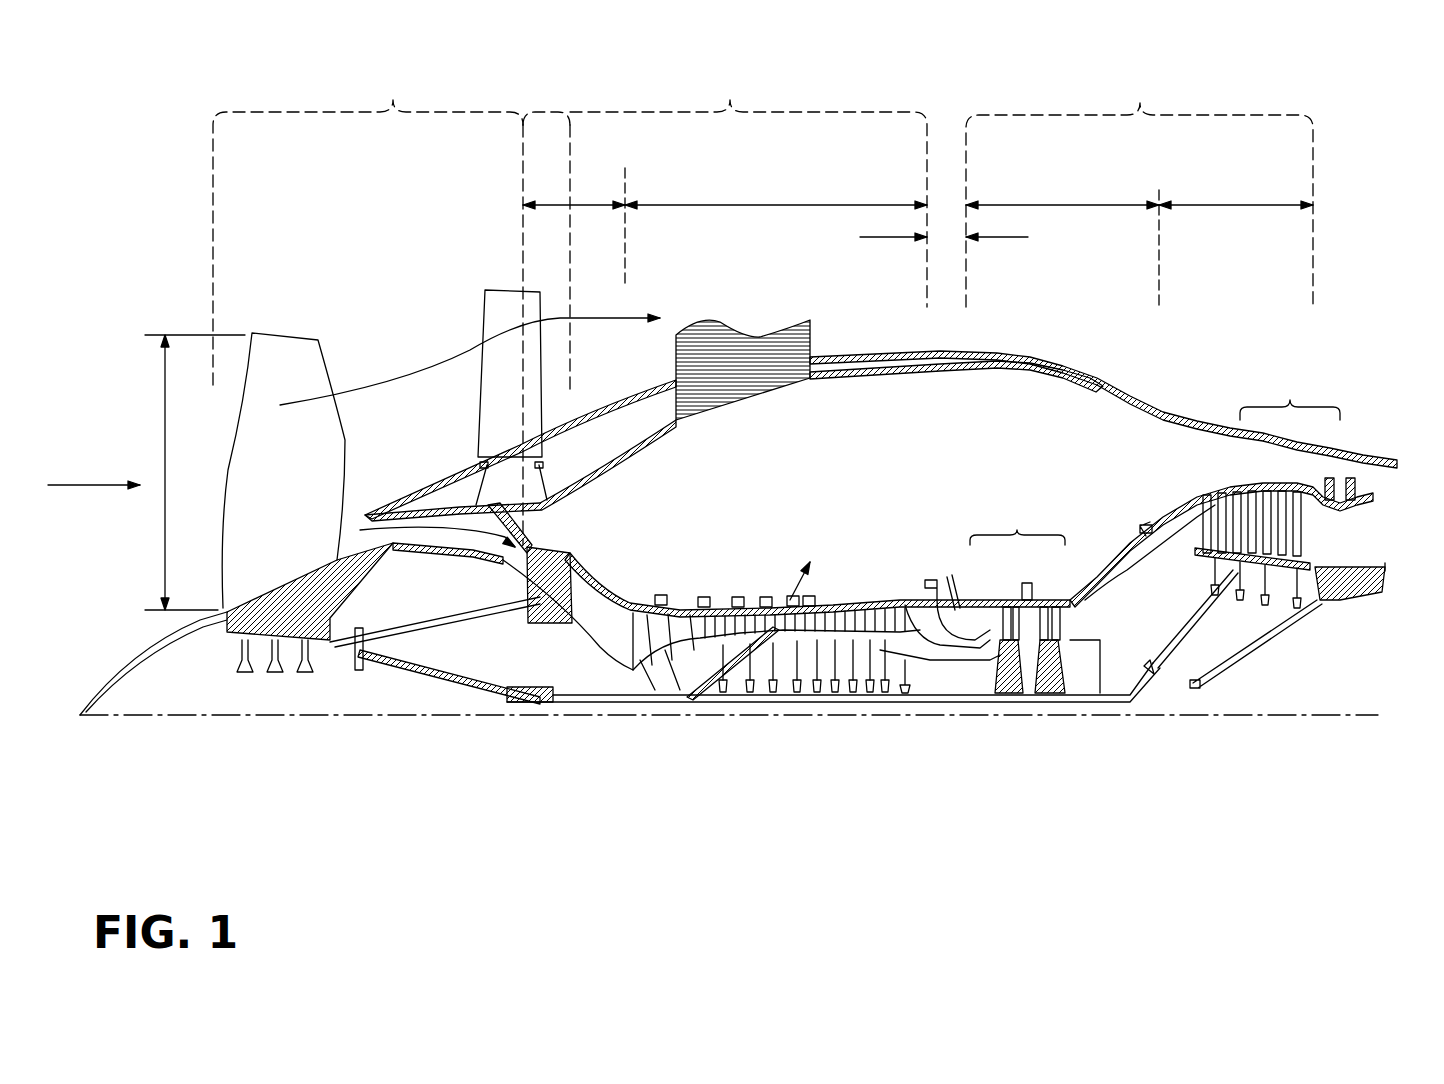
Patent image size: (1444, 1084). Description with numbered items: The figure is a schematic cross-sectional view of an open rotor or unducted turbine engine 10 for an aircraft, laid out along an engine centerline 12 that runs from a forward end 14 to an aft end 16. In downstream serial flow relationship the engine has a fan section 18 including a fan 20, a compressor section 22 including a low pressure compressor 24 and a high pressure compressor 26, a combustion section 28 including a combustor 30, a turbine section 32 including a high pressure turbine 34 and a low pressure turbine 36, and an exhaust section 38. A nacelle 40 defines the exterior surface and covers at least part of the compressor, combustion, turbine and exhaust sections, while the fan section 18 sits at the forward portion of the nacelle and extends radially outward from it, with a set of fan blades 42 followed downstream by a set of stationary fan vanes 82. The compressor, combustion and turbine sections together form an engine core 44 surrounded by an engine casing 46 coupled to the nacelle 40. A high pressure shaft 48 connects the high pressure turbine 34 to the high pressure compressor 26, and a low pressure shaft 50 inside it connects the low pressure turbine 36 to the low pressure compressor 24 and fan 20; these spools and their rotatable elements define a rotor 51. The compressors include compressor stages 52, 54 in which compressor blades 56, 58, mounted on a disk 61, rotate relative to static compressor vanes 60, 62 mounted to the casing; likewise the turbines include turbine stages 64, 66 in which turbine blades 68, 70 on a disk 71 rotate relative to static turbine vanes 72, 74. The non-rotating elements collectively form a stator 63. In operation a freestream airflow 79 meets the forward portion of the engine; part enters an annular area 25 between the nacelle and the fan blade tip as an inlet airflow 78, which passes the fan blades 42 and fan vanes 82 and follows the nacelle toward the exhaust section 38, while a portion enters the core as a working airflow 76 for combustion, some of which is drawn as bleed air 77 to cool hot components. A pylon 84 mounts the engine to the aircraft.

The unducted turbine engine 10 is at (1333, 235).
The engine centerline 12 is at (207, 718).
The forward end 14 is at (114, 433).
The aft end 16 is at (1414, 538).
The fan section 18 is at (393, 105).
The fan 20 is at (352, 312).
The compressor section 22 is at (730, 105).
The low pressure compressor 24 is at (558, 205).
The annular area 25 is at (165, 470).
The high pressure compressor length 26 is at (762, 205).
The combustion section 28 is at (875, 237).
The combustor 30 is at (958, 572).
The turbine section 32 is at (1140, 108).
The high pressure turbine 34 is at (1057, 205).
The low pressure turbine 36 is at (1235, 205).
The exhaust section 38 is at (1375, 510).
The nacelle 40 is at (1197, 410).
The fan blades 42 is at (300, 378).
The engine core 44 is at (893, 492).
The engine casing 46 is at (1142, 527).
The high pressure shaft 48 is at (933, 667).
The low pressure shaft 50 is at (530, 703).
The rotor 51 is at (788, 705).
The compressor stages 52 is at (637, 562).
The compressor stages 54 is at (763, 593).
The compressor blades 56 is at (570, 560).
The compressor blades 58 is at (690, 615).
The static compressor vanes 60 is at (545, 553).
The disk 61 is at (695, 695).
The static compressor vanes 62 is at (665, 600).
The stator 63 is at (660, 693).
The turbine stages 64 is at (1018, 594).
The turbine stages 66 is at (1221, 488).
The turbine blades 68 is at (1020, 593).
The turbine blades 70 is at (1298, 490).
The disk 71 is at (1033, 655).
The static turbine vanes 72 is at (1008, 593).
The static turbine vanes 74 is at (1282, 488).
The working airflow 76 is at (497, 538).
The bleed air 77 is at (793, 593).
The inlet airflow 78 is at (478, 352).
The freestream airflow 79 is at (102, 488).
The stationary fan vanes 82 is at (485, 388).
The pylon 84 is at (747, 333).